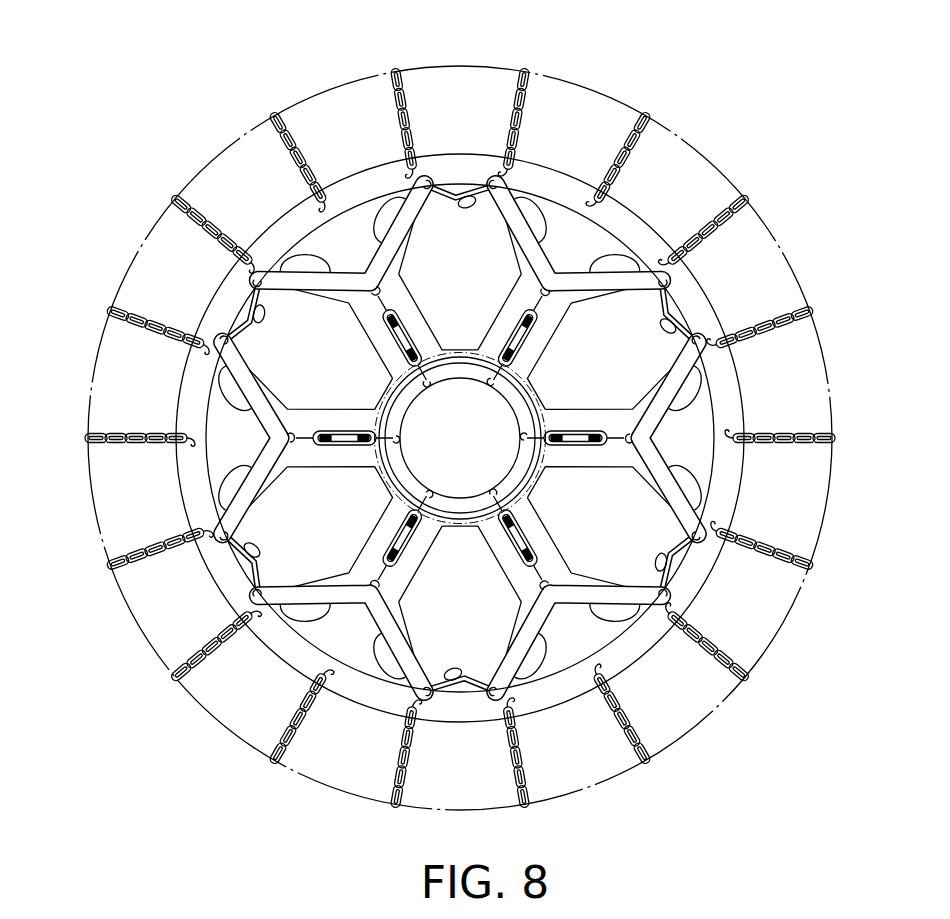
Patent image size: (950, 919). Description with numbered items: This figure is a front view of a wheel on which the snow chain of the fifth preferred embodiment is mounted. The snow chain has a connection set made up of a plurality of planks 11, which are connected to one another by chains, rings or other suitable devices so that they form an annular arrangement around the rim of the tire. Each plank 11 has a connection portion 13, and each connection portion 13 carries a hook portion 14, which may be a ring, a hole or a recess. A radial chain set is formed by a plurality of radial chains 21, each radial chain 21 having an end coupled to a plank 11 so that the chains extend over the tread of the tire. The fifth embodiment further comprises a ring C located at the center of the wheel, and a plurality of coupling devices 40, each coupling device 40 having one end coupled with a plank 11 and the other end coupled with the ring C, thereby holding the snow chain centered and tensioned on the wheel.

The plank 11 is at (762, 392).
The connection portion 13 is at (686, 493).
The hook portion 14 is at (642, 437).
The radial chain 21 is at (621, 150).
The coupling device 40 is at (583, 428).
The ring C is at (459, 372).